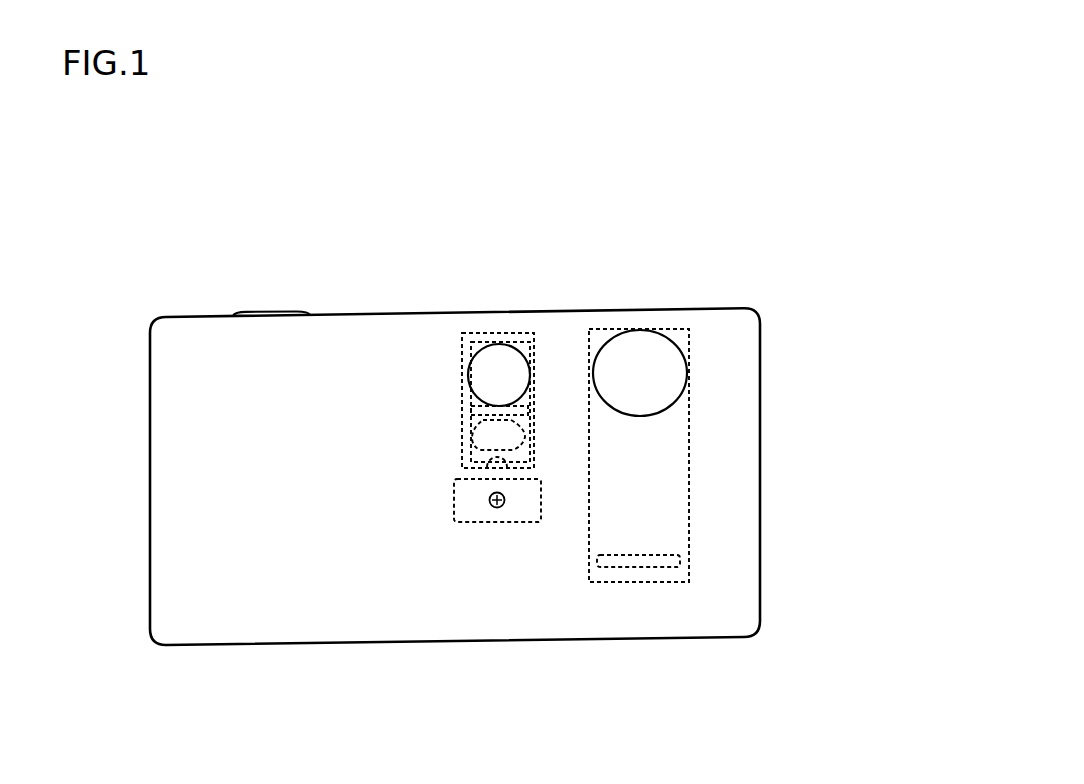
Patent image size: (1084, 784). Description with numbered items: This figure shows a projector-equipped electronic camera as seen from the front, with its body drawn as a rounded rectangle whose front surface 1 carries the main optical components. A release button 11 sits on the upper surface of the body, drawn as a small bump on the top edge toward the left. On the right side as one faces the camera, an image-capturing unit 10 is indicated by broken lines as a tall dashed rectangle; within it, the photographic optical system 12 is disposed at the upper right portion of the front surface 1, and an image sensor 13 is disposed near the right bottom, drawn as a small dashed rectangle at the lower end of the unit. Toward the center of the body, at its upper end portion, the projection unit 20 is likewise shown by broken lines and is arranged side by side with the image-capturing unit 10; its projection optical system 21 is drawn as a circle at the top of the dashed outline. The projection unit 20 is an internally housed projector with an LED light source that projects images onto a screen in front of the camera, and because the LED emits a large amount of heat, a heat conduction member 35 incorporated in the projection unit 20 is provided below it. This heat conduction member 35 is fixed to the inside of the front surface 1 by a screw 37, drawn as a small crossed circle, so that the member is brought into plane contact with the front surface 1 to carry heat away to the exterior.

The front surface 1 is at (259, 595).
The image-capturing unit 10 is at (698, 430).
The release button 11 is at (273, 313).
The photographic optical system 12 is at (641, 358).
The image sensor 13 is at (653, 559).
The projection unit 20 is at (443, 407).
The projection optical system 21 is at (500, 360).
The heat conduction member 35 is at (469, 508).
The screw 37 is at (499, 508).